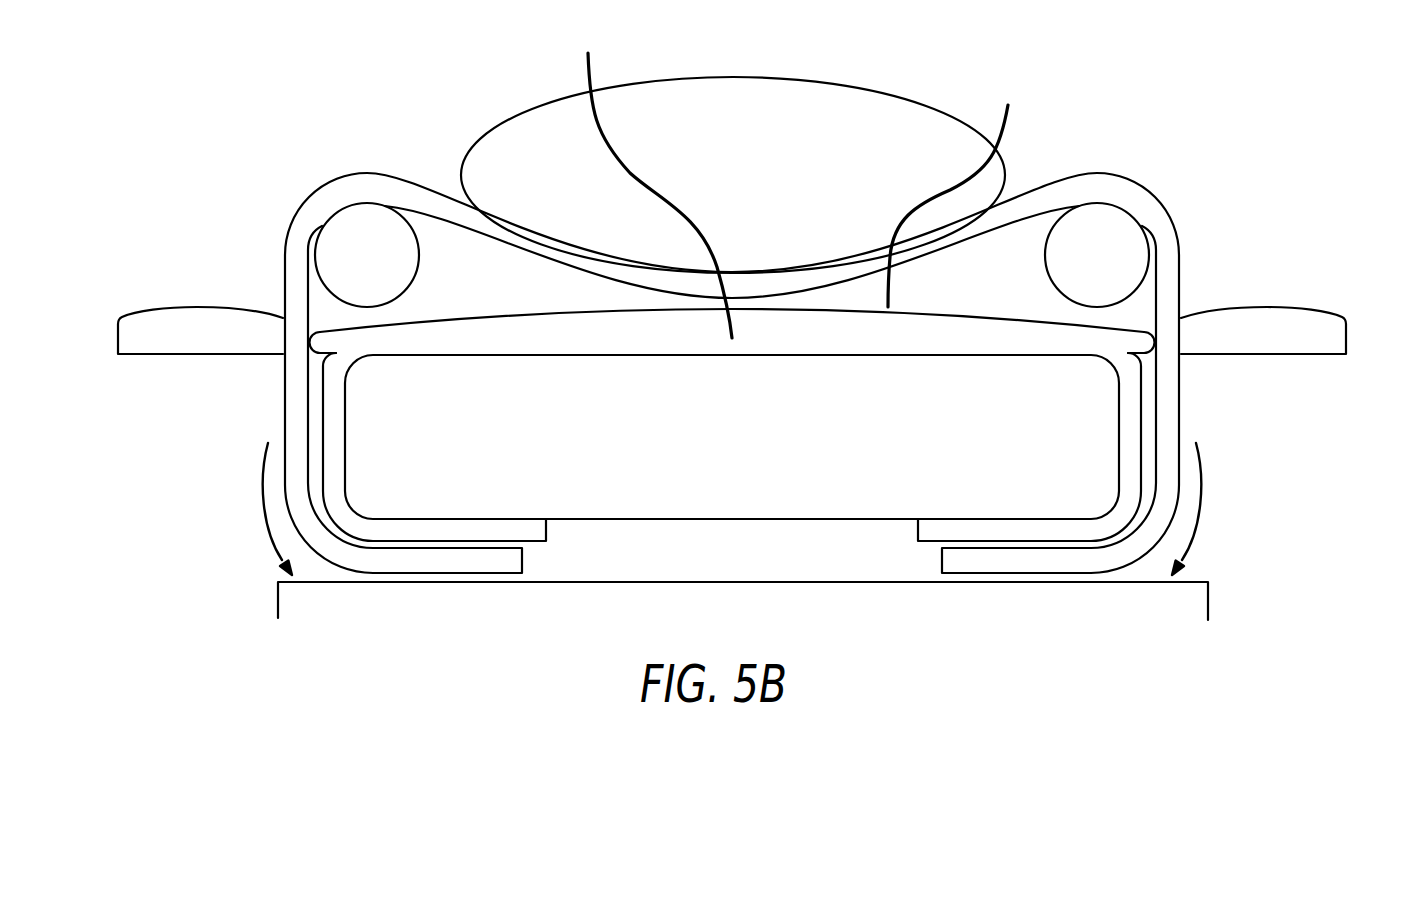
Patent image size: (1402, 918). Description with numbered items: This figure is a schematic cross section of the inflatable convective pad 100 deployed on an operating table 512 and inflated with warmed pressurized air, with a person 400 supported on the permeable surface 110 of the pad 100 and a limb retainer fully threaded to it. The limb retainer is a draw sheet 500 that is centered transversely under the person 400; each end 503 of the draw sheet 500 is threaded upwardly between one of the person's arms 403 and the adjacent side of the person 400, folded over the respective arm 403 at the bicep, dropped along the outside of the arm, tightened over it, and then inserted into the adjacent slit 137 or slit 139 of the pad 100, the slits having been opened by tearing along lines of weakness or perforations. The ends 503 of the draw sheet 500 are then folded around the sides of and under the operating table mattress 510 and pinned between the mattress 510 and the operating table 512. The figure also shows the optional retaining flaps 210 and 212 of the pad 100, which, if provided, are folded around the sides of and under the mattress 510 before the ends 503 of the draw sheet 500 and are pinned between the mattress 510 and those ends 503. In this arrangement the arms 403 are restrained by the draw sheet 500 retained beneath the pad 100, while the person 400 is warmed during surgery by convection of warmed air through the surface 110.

The inflatable convective pad 100 is at (1298, 397).
The permeable surface 110 is at (130, 286).
The slit 137 is at (280, 307).
The slit 139 is at (1192, 295).
The retaining flap 210 is at (530, 527).
The retaining flap 212 is at (930, 533).
The person 400 is at (792, 108).
The arm 403 is at (347, 240).
The draw sheet 500 is at (402, 195).
The end of draw sheet 503 is at (510, 560).
The operating table mattress 510 is at (1085, 483).
The operating table 512 is at (1210, 578).